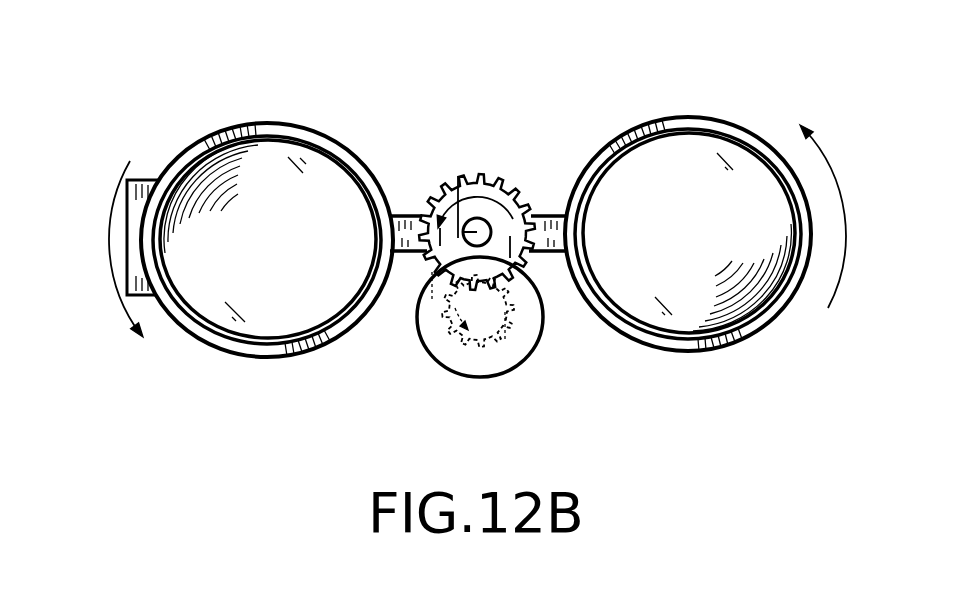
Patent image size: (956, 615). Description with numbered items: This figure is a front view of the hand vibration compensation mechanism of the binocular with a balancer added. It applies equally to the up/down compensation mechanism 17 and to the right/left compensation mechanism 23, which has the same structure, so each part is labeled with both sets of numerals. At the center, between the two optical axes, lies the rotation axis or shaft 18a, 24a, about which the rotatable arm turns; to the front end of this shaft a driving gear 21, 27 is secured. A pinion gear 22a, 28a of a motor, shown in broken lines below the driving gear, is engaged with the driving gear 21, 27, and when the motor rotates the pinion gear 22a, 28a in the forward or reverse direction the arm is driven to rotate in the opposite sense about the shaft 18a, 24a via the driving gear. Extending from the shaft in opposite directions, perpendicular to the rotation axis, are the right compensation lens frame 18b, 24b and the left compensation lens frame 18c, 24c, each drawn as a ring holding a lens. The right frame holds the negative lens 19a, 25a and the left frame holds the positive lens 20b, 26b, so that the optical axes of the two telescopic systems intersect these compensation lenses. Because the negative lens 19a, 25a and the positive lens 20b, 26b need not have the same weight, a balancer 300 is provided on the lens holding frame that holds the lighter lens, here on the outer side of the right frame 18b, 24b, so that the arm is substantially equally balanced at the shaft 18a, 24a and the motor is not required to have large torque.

The up/down hand vibration compensation mechanism 17 is at (476, 186).
The right/left compensation mechanism 23 is at (438, 97).
The rotation axis 18a is at (374, 333).
The shaft 24a is at (423, 254).
The right compensation lens frame 18b is at (391, 165).
The right compensation lens holding frame 24b is at (392, 215).
The left compensation lens frame 18c is at (564, 167).
The left compensation lens holding frame 24c is at (557, 215).
The negative lens 19a is at (268, 293).
The negative lens 25a is at (272, 300).
The positive lens 20b is at (714, 284).
The positive lens 26b is at (690, 296).
The driving gear 21 is at (477, 172).
The driving gear 27 is at (484, 180).
The pinion gear 22a is at (488, 360).
The pinion gear 28a is at (480, 347).
The balancer 300 is at (150, 180).